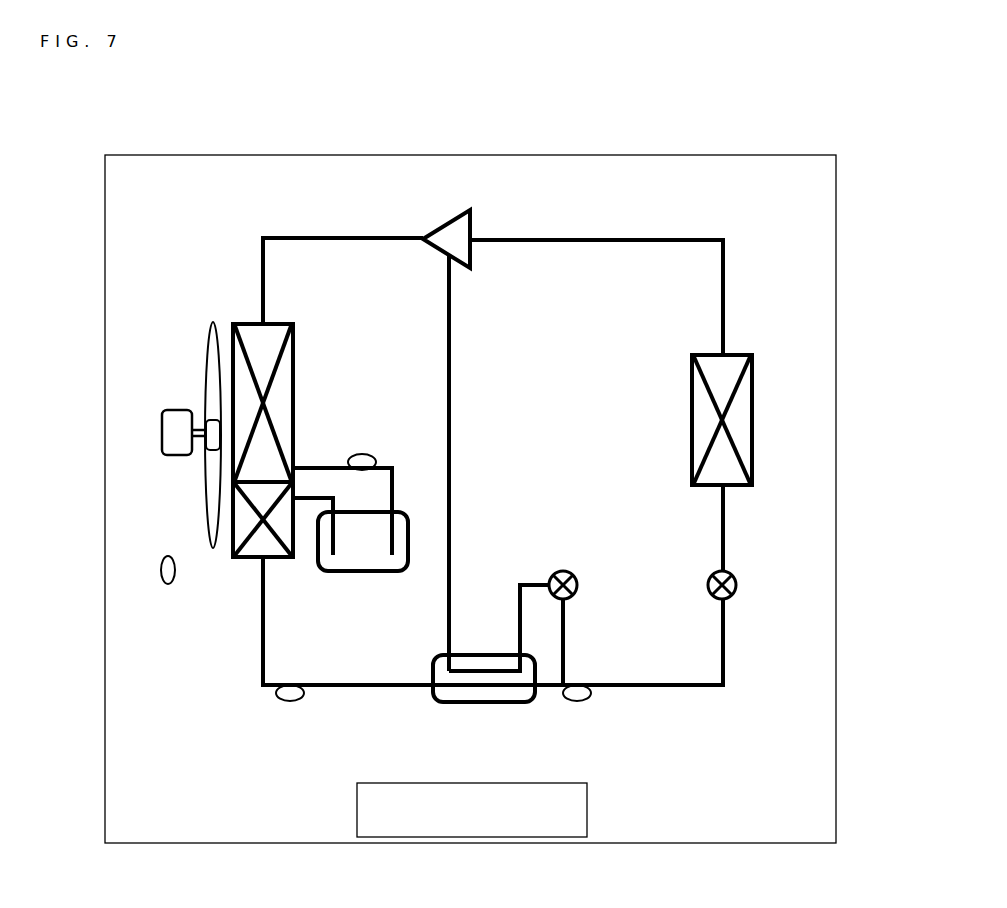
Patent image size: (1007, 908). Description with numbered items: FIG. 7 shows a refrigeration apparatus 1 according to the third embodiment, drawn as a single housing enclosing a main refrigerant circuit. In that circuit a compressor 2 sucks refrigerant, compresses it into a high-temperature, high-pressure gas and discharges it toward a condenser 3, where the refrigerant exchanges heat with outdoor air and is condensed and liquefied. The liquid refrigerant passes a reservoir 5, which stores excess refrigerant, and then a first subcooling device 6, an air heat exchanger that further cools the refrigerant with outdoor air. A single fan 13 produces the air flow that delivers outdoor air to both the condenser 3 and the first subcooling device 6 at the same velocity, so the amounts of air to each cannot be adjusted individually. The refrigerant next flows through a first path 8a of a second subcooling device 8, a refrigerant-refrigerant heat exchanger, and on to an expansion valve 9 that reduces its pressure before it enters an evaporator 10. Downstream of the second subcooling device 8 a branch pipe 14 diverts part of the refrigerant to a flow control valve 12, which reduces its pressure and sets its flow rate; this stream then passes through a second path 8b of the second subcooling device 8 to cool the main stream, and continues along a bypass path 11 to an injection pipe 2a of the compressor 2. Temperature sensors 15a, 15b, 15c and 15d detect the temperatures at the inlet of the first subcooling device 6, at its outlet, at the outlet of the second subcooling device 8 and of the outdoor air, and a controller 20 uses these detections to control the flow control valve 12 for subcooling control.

The refrigeration apparatus 1 is at (653, 155).
The compressor 2 is at (427, 228).
The injection pipe 2a is at (446, 262).
The condenser 3 is at (296, 340).
The reservoir 5 is at (375, 575).
The first subcooling device 6 is at (280, 560).
The second subcooling device 8 is at (432, 702).
The first path 8a is at (503, 692).
The second path 8b is at (488, 662).
The expansion valve 9 is at (736, 597).
The evaporator 10 is at (754, 420).
The bypass path 11 is at (453, 418).
The flow control valve 12 is at (566, 568).
The fan 13 is at (165, 412).
The branch pipe 14 is at (577, 683).
The temperature sensor 15a is at (362, 452).
The temperature sensor 15b is at (293, 704).
The temperature sensor 15c is at (585, 704).
The temperature sensor 15d is at (163, 556).
The controller 20 is at (587, 822).